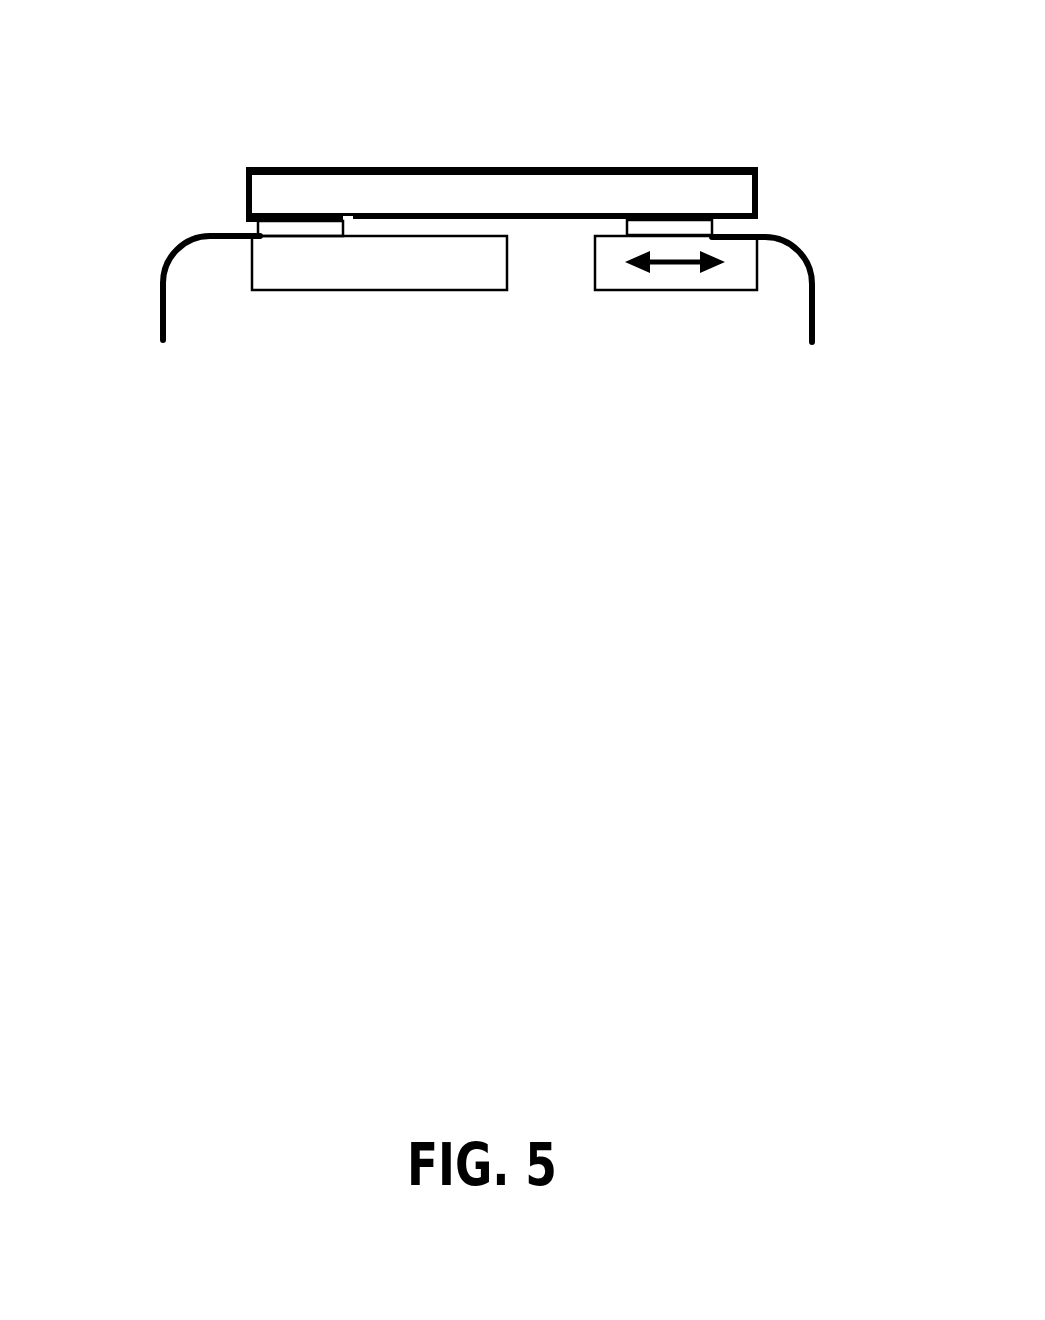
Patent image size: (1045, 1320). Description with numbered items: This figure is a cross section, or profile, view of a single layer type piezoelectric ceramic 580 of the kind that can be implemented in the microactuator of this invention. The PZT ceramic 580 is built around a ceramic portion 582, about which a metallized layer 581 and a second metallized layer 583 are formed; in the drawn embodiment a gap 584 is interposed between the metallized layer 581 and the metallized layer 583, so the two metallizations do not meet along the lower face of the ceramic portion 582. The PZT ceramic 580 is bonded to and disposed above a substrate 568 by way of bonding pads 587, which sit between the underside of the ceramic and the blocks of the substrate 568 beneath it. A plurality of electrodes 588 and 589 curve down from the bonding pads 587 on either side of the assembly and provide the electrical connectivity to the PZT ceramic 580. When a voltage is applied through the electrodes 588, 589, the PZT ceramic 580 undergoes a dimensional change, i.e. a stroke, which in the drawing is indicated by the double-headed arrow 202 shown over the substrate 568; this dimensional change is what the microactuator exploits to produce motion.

The piezoelectric ceramic 580 is at (632, 168).
The metallized layer 581 is at (296, 167).
The ceramic portion 582 is at (732, 195).
The metallized layer 583 is at (507, 213).
The gap 584 is at (375, 215).
The bonding pads 587 is at (276, 227).
The substrate 568 is at (472, 278).
The direction of motion arrow 202 is at (673, 266).
The electrode 588 is at (160, 320).
The electrode 589 is at (815, 317).